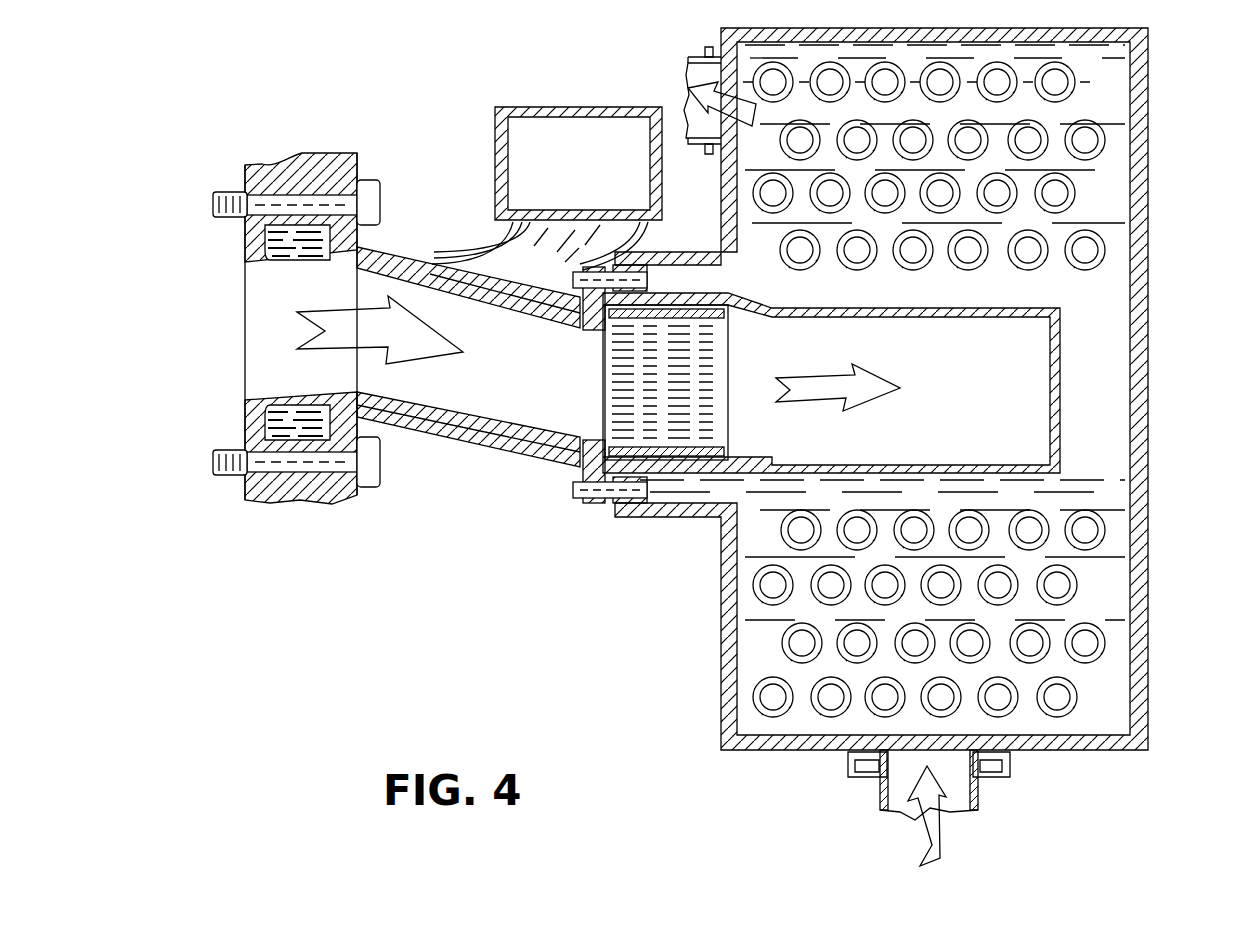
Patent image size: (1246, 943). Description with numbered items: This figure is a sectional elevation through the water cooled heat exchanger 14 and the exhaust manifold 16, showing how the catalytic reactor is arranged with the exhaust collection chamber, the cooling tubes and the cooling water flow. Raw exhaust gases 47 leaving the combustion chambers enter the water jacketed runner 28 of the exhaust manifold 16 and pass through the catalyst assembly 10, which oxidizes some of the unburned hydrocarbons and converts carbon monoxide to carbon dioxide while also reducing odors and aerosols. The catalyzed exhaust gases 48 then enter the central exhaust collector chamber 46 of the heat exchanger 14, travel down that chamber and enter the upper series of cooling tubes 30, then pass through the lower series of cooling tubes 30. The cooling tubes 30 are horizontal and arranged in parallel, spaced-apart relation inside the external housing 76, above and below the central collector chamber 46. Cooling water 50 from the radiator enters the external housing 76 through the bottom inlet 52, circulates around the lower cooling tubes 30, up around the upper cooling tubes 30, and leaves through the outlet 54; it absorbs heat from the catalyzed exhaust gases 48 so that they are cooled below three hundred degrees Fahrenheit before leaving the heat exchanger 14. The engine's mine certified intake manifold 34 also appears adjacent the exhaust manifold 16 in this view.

The catalyst assembly 10 is at (581, 373).
The heat exchanger 14 is at (1152, 96).
The exhaust manifold 16 is at (260, 506).
The water jacketed runner 28 is at (546, 458).
The cooling tube 30 is at (1078, 189).
The intake manifold 34 is at (634, 104).
The central exhaust collector chamber 46 is at (1027, 421).
The raw exhaust gases 47 is at (300, 304).
The catalyzed exhaust gases 48 is at (880, 381).
The cooling water 50 is at (690, 83).
The bottom inlet 52 is at (878, 797).
The outlet 54 is at (697, 56).
The external housing 76 is at (1148, 669).